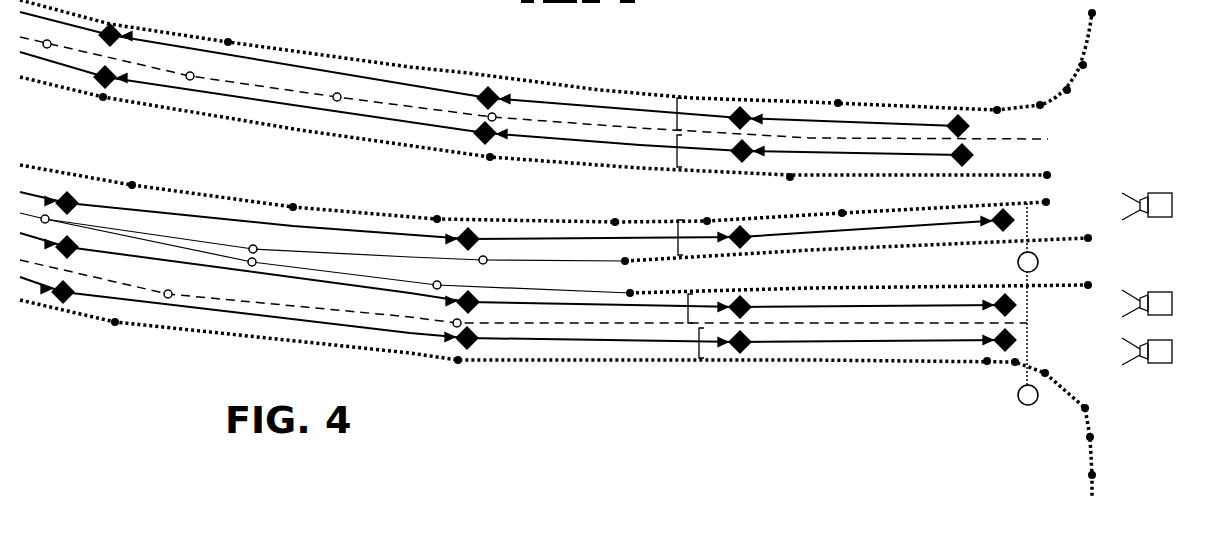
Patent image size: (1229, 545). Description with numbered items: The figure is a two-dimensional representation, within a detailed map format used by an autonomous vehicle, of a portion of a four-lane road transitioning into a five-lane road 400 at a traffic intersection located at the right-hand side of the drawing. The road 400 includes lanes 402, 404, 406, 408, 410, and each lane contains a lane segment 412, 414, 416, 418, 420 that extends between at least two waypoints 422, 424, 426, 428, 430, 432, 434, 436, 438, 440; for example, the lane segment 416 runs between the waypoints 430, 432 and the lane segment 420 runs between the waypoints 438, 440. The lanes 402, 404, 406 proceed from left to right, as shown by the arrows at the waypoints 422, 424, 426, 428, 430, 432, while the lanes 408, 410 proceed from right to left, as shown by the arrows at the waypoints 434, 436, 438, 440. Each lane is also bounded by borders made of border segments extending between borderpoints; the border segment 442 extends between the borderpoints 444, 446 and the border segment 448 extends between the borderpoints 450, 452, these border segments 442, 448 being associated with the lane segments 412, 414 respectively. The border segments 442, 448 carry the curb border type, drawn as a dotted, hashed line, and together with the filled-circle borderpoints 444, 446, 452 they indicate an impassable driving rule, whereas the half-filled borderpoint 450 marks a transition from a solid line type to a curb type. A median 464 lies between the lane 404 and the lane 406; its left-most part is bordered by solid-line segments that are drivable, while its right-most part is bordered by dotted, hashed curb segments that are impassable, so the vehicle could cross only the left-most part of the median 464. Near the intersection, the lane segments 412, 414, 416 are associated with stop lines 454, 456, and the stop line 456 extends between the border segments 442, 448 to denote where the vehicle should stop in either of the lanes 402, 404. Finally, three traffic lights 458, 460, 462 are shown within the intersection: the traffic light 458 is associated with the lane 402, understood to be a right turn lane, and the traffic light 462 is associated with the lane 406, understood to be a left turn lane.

The five-lane road 400 is at (803, 52).
The lane 402 is at (699, 355).
The lane 404 is at (688, 322).
The lane 406 is at (677, 244).
The lane 408 is at (677, 158).
The lane 410 is at (677, 108).
The lane segment 412 is at (832, 348).
The lane segment 414 is at (842, 305).
The lane segment 416 is at (823, 231).
The lane segment 418 is at (850, 156).
The lane segment 420 is at (868, 122).
The waypoint 422 is at (745, 352).
The waypoint 424 is at (1000, 361).
The waypoint 426 is at (745, 298).
The waypoint 428 is at (1009, 296).
The waypoint 430 is at (740, 246).
The waypoint 432 is at (1003, 230).
The waypoint 434 is at (742, 160).
The waypoint 436 is at (962, 164).
The waypoint 438 is at (742, 108).
The waypoint 440 is at (957, 116).
The border segment 442 is at (1020, 375).
The borderpoint 444 is at (1015, 366).
The borderpoint 446 is at (1043, 380).
The border segment 448 is at (925, 287).
The borderpoint 450 is at (630, 292).
The borderpoint 452 is at (1090, 285).
The stop line 454 is at (1028, 226).
The stop line 456 is at (1030, 338).
The traffic light 458 is at (1170, 363).
The traffic light 460 is at (1173, 300).
The traffic light 462 is at (1168, 193).
The median 464 is at (533, 284).